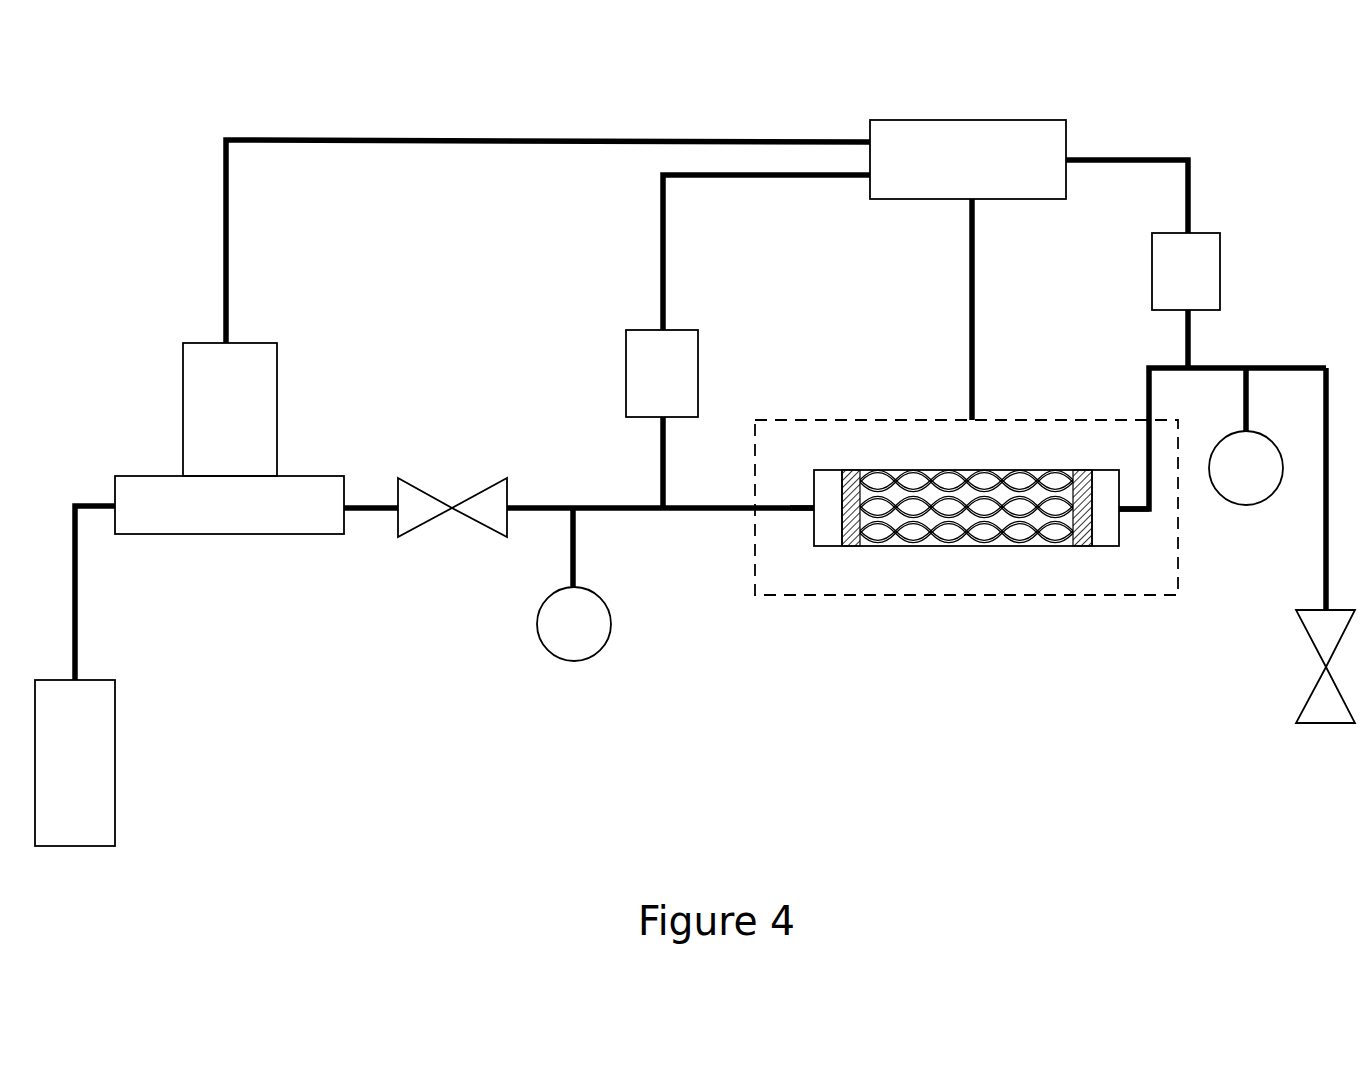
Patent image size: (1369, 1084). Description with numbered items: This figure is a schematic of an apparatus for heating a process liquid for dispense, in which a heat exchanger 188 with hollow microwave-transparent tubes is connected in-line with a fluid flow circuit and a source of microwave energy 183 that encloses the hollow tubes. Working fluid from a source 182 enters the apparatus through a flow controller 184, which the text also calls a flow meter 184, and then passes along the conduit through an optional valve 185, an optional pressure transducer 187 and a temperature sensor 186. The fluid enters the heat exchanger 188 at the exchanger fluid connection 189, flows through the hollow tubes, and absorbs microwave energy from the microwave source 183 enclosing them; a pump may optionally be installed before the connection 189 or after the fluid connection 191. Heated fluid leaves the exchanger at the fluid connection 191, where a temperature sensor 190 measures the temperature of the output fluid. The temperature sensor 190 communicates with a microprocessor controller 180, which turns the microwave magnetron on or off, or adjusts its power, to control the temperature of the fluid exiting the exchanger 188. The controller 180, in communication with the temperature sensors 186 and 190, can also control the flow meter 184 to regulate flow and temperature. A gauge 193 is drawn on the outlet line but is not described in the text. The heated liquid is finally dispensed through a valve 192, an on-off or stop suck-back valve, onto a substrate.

The microprocessor controller 180 is at (943, 120).
The source of working fluid 182 is at (115, 711).
The source of microwave energy 183 is at (995, 597).
The flow controller 184 is at (182, 428).
The valve 185 is at (459, 541).
The temperature sensor 186 is at (626, 368).
The pressure transducer 187 is at (547, 653).
The heat exchanger 188 is at (1007, 470).
The exchanger fluid connection 189 is at (785, 512).
The temperature sensor 190 is at (1220, 272).
The fluid connection 191 is at (1137, 517).
The valve 192 is at (1318, 651).
The pressure gauge 193 is at (1267, 492).